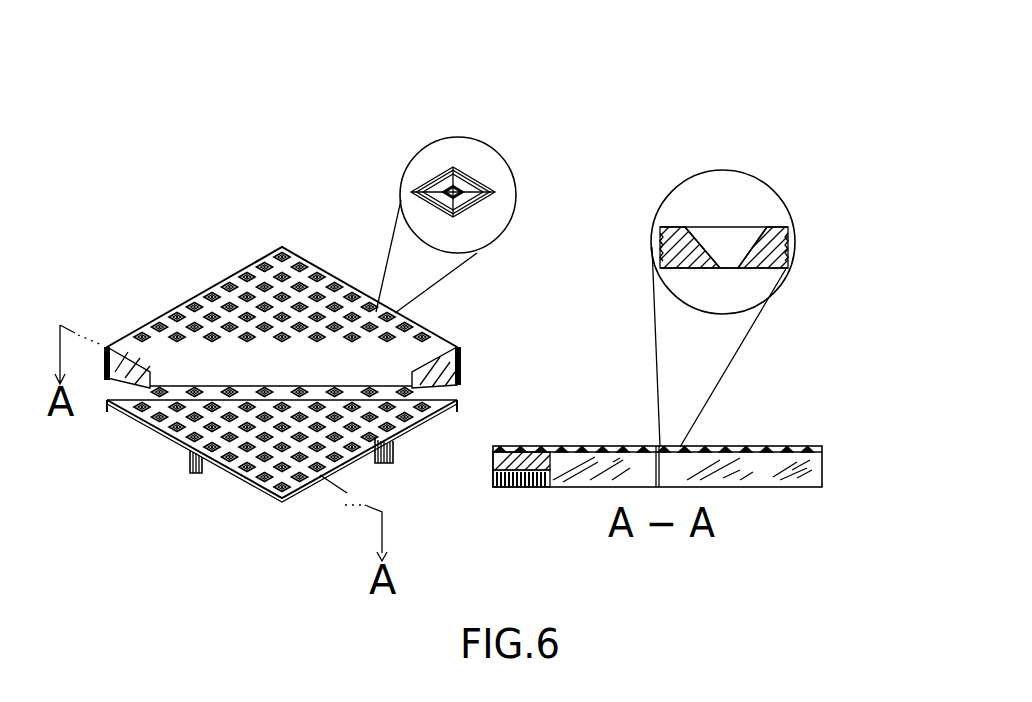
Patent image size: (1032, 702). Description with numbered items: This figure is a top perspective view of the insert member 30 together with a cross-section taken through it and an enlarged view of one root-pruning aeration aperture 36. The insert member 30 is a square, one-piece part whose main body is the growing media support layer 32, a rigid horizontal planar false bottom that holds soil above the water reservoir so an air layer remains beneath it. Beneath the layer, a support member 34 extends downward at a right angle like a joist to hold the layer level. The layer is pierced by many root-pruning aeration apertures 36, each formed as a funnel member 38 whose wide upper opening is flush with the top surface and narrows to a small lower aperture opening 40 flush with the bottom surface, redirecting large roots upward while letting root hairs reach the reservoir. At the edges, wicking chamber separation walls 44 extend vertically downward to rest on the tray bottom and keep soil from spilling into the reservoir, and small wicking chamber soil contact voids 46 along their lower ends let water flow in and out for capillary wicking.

The insert member 30 is at (297, 172).
The growing media support layer 32 is at (200, 297).
The support member for growing media support layer 34 is at (198, 463).
The root-pruning aeration aperture 36 is at (487, 142).
The funnel member 38 is at (698, 232).
The lower aperture opening 40 is at (730, 267).
The wicking chamber separation wall 44 is at (450, 343).
The wicking chamber soil contact void 46 is at (455, 378).